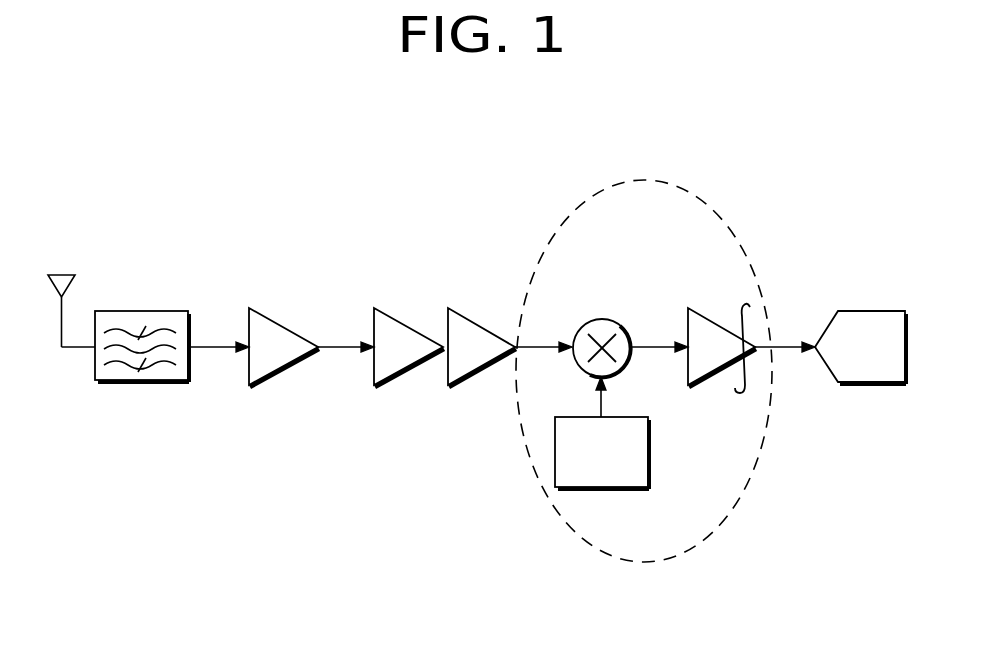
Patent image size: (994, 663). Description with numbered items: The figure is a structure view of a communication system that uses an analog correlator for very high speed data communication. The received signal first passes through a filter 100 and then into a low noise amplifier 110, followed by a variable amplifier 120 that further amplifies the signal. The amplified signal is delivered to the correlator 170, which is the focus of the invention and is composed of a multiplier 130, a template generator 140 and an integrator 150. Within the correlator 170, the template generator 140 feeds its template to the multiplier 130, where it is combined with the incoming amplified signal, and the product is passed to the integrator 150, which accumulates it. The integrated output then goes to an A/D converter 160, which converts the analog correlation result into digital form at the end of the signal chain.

The filter 100 is at (142, 311).
The low noise amplifier 110 is at (282, 319).
The variable amplifier 120 is at (406, 319).
The multiplier 130 is at (597, 319).
The template generator 140 is at (648, 448).
The integrator 150 is at (718, 319).
The A/D converter 160 is at (865, 311).
The correlator 170 is at (646, 180).